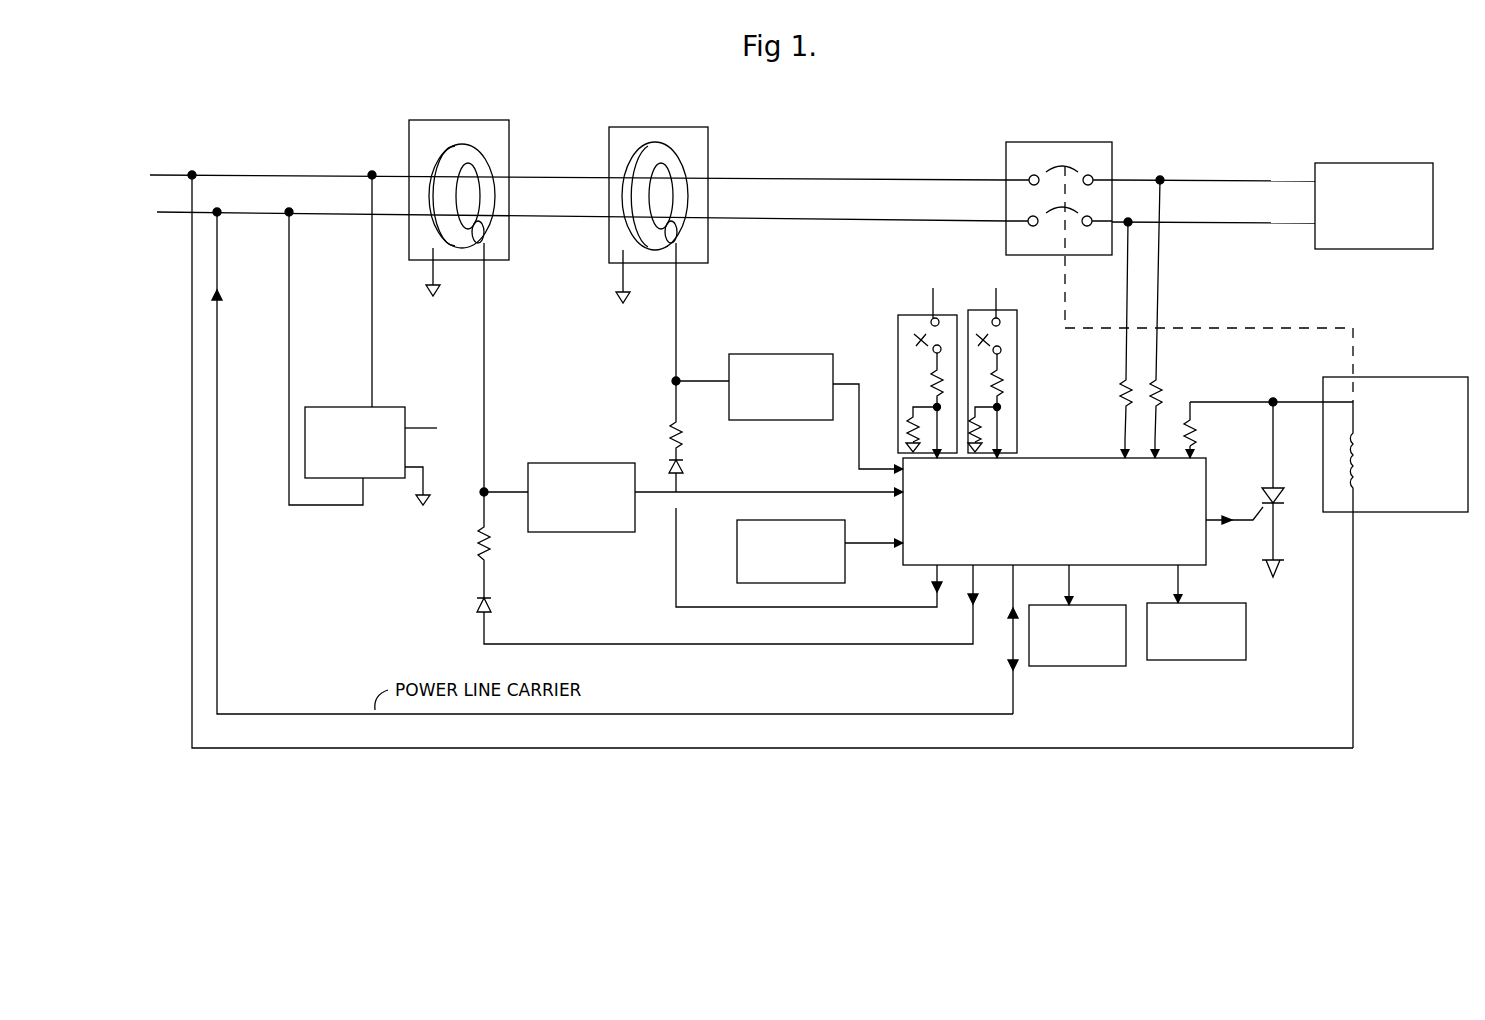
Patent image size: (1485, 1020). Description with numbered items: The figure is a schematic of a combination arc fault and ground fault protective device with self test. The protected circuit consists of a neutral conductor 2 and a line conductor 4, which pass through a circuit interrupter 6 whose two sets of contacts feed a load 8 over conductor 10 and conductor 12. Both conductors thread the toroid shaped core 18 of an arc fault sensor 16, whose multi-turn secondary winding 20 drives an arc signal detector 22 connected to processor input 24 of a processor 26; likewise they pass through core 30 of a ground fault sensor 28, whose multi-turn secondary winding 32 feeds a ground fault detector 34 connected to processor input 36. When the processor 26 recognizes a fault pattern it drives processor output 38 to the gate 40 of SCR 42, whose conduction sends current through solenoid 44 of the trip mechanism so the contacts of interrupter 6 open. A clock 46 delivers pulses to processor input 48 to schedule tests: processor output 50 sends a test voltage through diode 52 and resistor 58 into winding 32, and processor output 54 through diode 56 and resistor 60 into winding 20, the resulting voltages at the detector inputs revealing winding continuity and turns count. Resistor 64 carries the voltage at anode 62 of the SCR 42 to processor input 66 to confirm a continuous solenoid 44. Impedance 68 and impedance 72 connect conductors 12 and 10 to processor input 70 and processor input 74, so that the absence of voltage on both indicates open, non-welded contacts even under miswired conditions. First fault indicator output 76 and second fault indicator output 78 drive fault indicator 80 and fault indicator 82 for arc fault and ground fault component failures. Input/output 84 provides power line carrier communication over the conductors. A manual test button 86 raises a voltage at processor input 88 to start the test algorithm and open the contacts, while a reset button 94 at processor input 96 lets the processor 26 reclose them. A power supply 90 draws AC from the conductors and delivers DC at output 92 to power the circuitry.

The neutral conductor 2 is at (251, 216).
The line conductor 4 is at (277, 172).
The circuit interrupter 6 is at (1057, 140).
The load 8 is at (1385, 172).
The conductor 10 is at (1278, 170).
The conductor 12 is at (1280, 232).
The sensor 16 is at (410, 120).
The toroid shaped core 18 is at (496, 160).
The multi-turn secondary winding 20 is at (494, 244).
The arc signal detector 22 is at (586, 460).
The processor input 24 is at (894, 500).
The processor 26 is at (1074, 485).
The ground fault sensor 28 is at (710, 130).
The core 30 is at (625, 165).
The multi-turn secondary winding 32 is at (690, 247).
The ground fault detector 34 is at (780, 352).
The processor input 36 is at (897, 462).
The processor output 38 is at (1218, 514).
The gate 40 is at (1253, 528).
The SCR 42 is at (1286, 484).
The solenoid 44 is at (1360, 440).
The clock 46 is at (737, 553).
The processor input 48 is at (893, 560).
The processor output 50 is at (920, 570).
The diode 52 is at (688, 466).
The processor output 54 is at (962, 578).
The diode 56 is at (455, 604).
The resistor 58 is at (688, 434).
The resistor 60 is at (466, 535).
The anode 62 is at (1275, 396).
The resistor 64 is at (1197, 430).
The processor input 66 is at (1205, 458).
The impedance 68 is at (1118, 392).
The processor input 70 is at (1116, 452).
The impedance 72 is at (1160, 385).
The processor input 74 is at (1147, 470).
The first fault indicator output 76 is at (1078, 572).
The second fault indicator output 78 is at (1182, 572).
The fault indicator 80 is at (1093, 666).
The fault indicator 82 is at (1197, 660).
The input/output 84 is at (1005, 582).
The test button 86 is at (973, 312).
The processor input 88 is at (1000, 462).
The power supply 90 is at (392, 405).
The output 92 is at (420, 422).
The reset button 94 is at (897, 314).
The processor input 96 is at (942, 462).